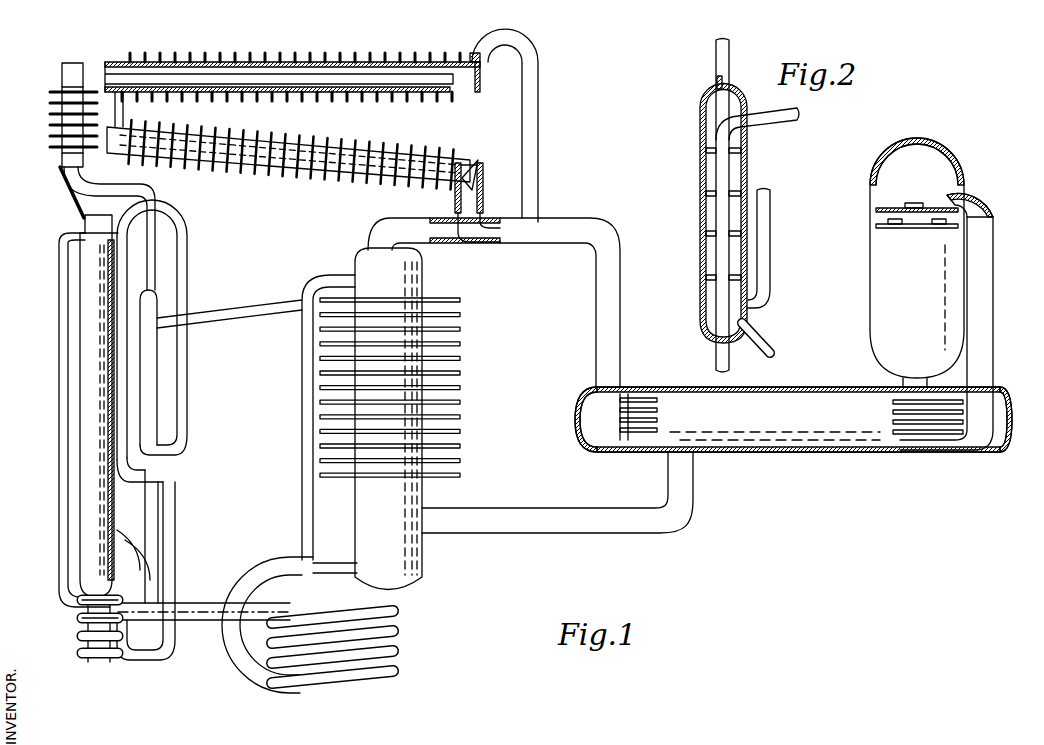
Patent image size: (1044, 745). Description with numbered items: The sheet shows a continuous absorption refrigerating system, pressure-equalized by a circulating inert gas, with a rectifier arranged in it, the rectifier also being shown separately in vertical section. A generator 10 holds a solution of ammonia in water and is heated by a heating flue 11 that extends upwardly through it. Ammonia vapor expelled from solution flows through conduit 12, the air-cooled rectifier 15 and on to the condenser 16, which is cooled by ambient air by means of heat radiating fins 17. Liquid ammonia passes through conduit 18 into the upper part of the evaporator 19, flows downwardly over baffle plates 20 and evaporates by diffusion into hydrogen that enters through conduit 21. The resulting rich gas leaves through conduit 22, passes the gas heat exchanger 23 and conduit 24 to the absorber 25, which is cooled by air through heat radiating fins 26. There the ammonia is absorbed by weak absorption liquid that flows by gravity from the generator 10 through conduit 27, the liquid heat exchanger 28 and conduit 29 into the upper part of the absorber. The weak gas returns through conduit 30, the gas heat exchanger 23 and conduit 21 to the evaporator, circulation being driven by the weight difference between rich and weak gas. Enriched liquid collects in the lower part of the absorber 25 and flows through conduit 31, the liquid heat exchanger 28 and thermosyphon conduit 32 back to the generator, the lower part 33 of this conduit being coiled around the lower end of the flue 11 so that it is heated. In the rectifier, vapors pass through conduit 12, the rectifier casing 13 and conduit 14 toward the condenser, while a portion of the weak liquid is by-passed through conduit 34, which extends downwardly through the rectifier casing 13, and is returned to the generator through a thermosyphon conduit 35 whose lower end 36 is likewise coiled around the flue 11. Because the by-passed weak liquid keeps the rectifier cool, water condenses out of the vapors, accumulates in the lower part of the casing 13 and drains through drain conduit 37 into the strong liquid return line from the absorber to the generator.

In FIG. 1, the generator 10 is at (80, 507).
In FIG. 1, the heating flue 11 is at (82, 621).
In FIG. 1, the conduit 12 is at (188, 265).
In FIG. 2, the conduit 12 is at (771, 233).
In FIG. 1, the rectifier casing 13 is at (160, 370).
In FIG. 2, the rectifier casing 13 is at (748, 166).
In FIG. 1, the conduit 14 is at (150, 186).
In FIG. 2, the conduit 14 is at (716, 58).
In FIG. 1, the air-cooled rectifier 15 is at (62, 70).
In FIG. 1, the condenser 16 is at (288, 137).
In FIG. 1, the heat radiating fins 17 is at (332, 60).
In FIG. 1, the conduit 18 is at (474, 212).
In FIG. 1, the evaporator 19 is at (870, 299).
In FIG. 1, the baffle plates 20 is at (890, 210).
In FIG. 1, the conduit 21 is at (994, 222).
In FIG. 1, the conduit 22 is at (903, 382).
In FIG. 1, the gas heat exchanger 23 is at (796, 455).
In FIG. 1, the conduit 24 is at (482, 508).
In FIG. 1, the absorber 25 is at (425, 493).
In FIG. 1, the heat radiating fins 26 is at (460, 332).
In FIG. 1, the conduit 27 is at (158, 575).
In FIG. 1, the liquid heat exchanger 28 is at (332, 690).
In FIG. 1, the conduit 29 is at (301, 470).
In FIG. 1, the conduit 30 is at (618, 238).
In FIG. 1, the conduit 31 is at (333, 562).
In FIG. 1, the thermosyphon conduit 32 is at (60, 548).
In FIG. 1, the lower part of thermosyphon conduit 33 is at (84, 655).
In FIG. 1, the conduit 34 is at (232, 318).
In FIG. 2, the conduit 34 is at (766, 127).
In FIG. 1, the thermosyphon conduit 35 is at (140, 455).
In FIG. 1, the lower end of thermosyphon conduit 36 is at (76, 602).
In FIG. 1, the drain conduit 37 is at (176, 545).